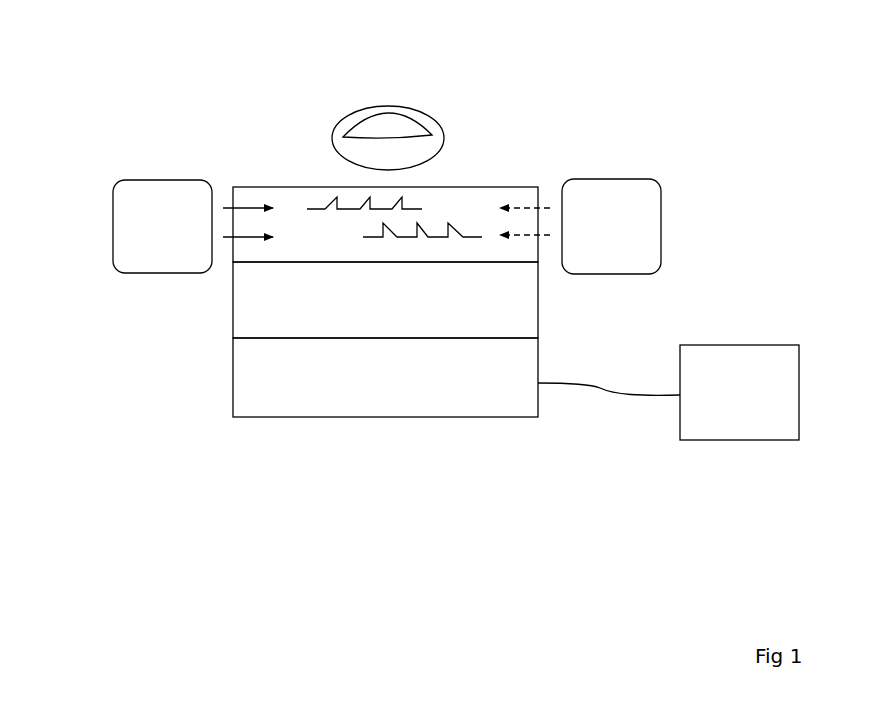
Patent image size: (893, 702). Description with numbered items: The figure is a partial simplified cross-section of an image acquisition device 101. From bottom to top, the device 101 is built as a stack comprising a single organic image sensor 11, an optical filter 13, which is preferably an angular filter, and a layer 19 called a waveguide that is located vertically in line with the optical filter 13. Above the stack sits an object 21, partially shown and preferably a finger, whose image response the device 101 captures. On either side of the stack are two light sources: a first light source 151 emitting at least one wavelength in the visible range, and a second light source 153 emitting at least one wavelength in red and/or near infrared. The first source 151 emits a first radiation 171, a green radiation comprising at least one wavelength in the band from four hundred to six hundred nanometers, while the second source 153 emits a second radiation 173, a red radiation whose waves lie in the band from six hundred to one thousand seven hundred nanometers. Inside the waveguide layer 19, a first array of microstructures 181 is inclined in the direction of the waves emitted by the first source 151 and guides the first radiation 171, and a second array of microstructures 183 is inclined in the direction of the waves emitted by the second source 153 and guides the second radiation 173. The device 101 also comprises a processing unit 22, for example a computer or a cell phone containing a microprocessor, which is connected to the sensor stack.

The image acquisition device 101 is at (667, 107).
The waveguide layer 19 is at (455, 183).
The optical filter 13 is at (233, 308).
The organic image sensor 11 is at (233, 377).
The object 21 is at (422, 108).
The second radiation 173 is at (252, 205).
The first radiation 171 is at (523, 205).
The second array of microstructures 183 is at (335, 195).
The first array of microstructures 181 is at (455, 228).
The second light source 153 is at (110, 202).
The first light source 151 is at (663, 228).
The processing unit 22 is at (802, 372).